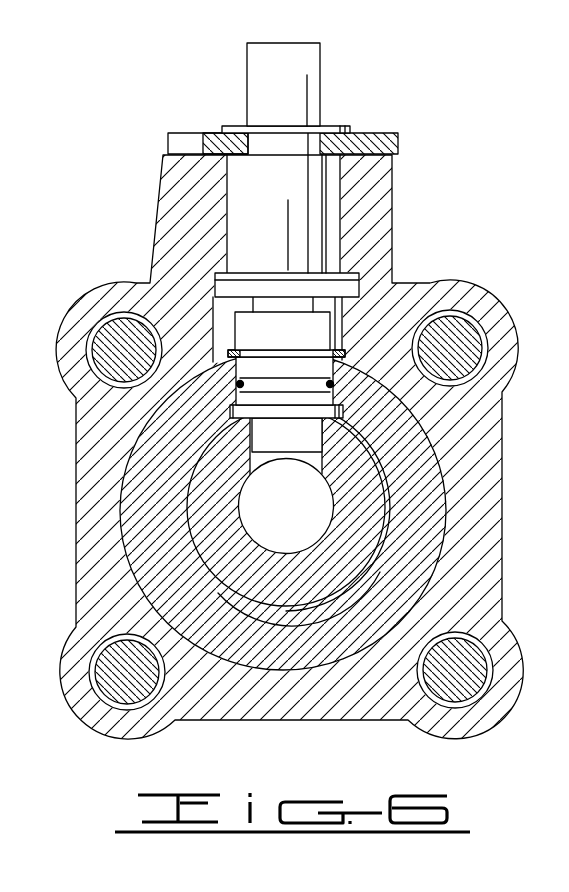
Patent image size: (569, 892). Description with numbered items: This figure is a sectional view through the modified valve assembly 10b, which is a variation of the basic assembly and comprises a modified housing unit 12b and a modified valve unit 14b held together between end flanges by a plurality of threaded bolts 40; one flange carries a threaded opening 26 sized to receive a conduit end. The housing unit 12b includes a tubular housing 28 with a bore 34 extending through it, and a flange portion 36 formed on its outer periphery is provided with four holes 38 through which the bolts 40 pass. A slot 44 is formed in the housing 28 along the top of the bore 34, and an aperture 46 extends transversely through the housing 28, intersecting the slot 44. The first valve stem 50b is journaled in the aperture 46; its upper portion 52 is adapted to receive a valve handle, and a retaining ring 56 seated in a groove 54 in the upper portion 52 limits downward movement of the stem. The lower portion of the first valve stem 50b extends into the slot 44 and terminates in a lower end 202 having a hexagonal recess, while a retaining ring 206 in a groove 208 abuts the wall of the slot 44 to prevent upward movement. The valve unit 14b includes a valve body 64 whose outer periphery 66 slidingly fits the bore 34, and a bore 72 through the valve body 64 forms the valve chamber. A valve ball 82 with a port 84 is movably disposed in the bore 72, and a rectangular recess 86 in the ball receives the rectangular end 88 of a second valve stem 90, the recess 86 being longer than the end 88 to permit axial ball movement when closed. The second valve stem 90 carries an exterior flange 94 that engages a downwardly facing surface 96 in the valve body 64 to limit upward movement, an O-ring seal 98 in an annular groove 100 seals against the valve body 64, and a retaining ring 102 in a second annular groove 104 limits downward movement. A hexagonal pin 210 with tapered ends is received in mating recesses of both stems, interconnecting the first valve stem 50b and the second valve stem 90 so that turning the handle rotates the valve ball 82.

The modified valve assembly 10b is at (281, 408).
The modified housing unit 12b is at (396, 250).
The modified valve unit 14b is at (463, 474).
The threaded opening 26 is at (13, 555).
The tubular housing 28 is at (368, 219).
The bore 34 is at (312, 660).
The flange portion 36 is at (73, 374).
The holes 38 is at (118, 322).
The threaded bolts 40 is at (100, 340).
The slot 44 is at (220, 318).
The aperture 46 is at (232, 200).
The first valve stem 50b is at (330, 193).
The upper portion 52 is at (302, 68).
The groove 54 is at (257, 128).
The retaining ring 56 is at (236, 126).
The valve body 64 is at (275, 666).
The outer periphery 66 is at (403, 632).
The bore 72 is at (230, 582).
The valve ball 82 is at (353, 538).
The port 84 is at (285, 527).
The rectangular recess 86 is at (308, 460).
The rectangular end 88 is at (267, 442).
The second valve stem 90 is at (336, 385).
The exterior flange 94 is at (345, 412).
The downwardly facing surface 96 is at (231, 409).
The O-ring seal 98 is at (235, 385).
The annular groove 100 is at (319, 367).
The retaining ring 102 is at (230, 351).
The second annular groove 104 is at (283, 352).
The lower end 202 is at (217, 295).
The retaining ring 206 is at (259, 283).
The groove 208 is at (318, 276).
The pin 210 is at (293, 308).